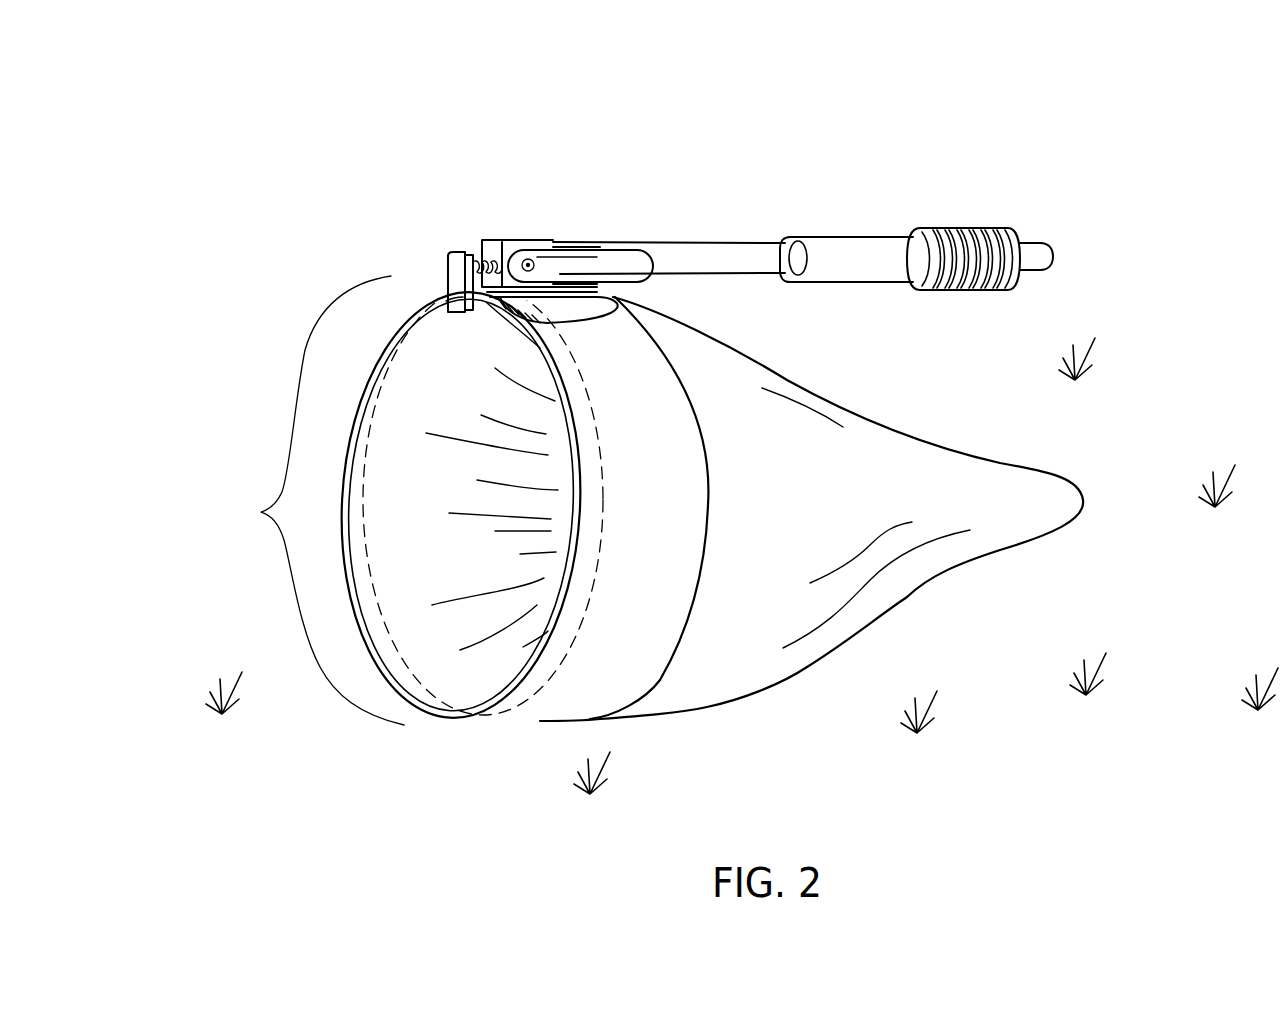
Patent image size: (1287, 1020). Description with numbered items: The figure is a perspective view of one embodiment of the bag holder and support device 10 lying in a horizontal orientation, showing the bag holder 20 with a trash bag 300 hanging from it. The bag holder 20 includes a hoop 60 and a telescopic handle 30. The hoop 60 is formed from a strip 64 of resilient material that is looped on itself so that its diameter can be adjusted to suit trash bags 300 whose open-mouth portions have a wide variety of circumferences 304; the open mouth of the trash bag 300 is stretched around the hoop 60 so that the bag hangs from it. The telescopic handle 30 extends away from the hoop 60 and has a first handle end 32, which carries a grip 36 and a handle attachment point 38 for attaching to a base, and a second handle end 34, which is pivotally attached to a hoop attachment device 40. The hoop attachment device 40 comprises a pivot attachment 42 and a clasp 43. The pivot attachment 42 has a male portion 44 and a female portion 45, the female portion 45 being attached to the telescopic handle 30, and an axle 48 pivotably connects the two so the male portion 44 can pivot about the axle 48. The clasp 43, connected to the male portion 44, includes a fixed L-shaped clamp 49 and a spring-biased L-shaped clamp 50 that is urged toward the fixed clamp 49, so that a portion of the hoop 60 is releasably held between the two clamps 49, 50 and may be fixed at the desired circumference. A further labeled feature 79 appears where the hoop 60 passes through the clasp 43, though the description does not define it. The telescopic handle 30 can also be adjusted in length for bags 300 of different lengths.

The bag holder and support device 10 is at (595, 118).
The bag holder 20 is at (710, 180).
The telescopic handle 30 is at (850, 238).
The first handle end 32 is at (1035, 205).
The second handle end 34 is at (492, 197).
The grip 36 is at (960, 290).
The handle attachment point 38 is at (1040, 272).
The hoop attachment device 40 is at (460, 225).
The pivot attachment 42 is at (527, 193).
The clasp 43 is at (456, 313).
The male portion 44 is at (597, 287).
The female portion 45 is at (572, 250).
The axle 48 is at (528, 259).
The fixed L-shaped clamp 49 is at (597, 293).
The spring-biased L-shaped clamp 50 is at (445, 258).
The hoop 60 is at (607, 317).
The strip 64 is at (572, 312).
The hoop engagement portion 79 is at (526, 333).
The trash bag 300 is at (912, 456).
The circumference 304 is at (404, 500).